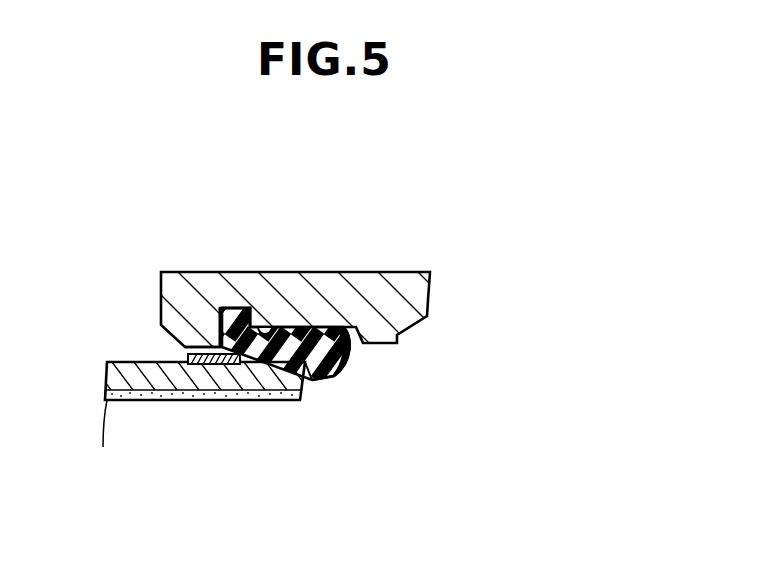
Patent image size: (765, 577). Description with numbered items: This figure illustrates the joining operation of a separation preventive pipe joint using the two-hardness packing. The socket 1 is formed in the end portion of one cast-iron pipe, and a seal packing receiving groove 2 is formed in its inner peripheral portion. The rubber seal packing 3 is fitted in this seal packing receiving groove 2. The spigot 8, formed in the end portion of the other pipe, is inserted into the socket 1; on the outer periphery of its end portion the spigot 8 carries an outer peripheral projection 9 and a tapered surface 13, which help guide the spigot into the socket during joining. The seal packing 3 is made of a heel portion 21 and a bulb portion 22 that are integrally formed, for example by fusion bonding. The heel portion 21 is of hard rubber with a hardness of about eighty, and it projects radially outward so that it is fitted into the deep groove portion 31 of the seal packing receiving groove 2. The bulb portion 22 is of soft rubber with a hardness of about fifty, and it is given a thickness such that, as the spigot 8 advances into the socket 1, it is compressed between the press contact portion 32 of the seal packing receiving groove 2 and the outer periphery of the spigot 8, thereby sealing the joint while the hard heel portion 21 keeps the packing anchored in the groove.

The socket 1 is at (385, 288).
The seal packing receiving groove 2 is at (348, 345).
The seal packing 3 is at (308, 383).
The spigot 8 is at (138, 362).
The outer peripheral projection 9 is at (204, 345).
The tapered surface 13 is at (268, 325).
The heel portion 21 is at (238, 330).
The bulb portion 22 is at (338, 372).
The deep groove portion 31 is at (220, 364).
The press contact portion 32 is at (320, 379).